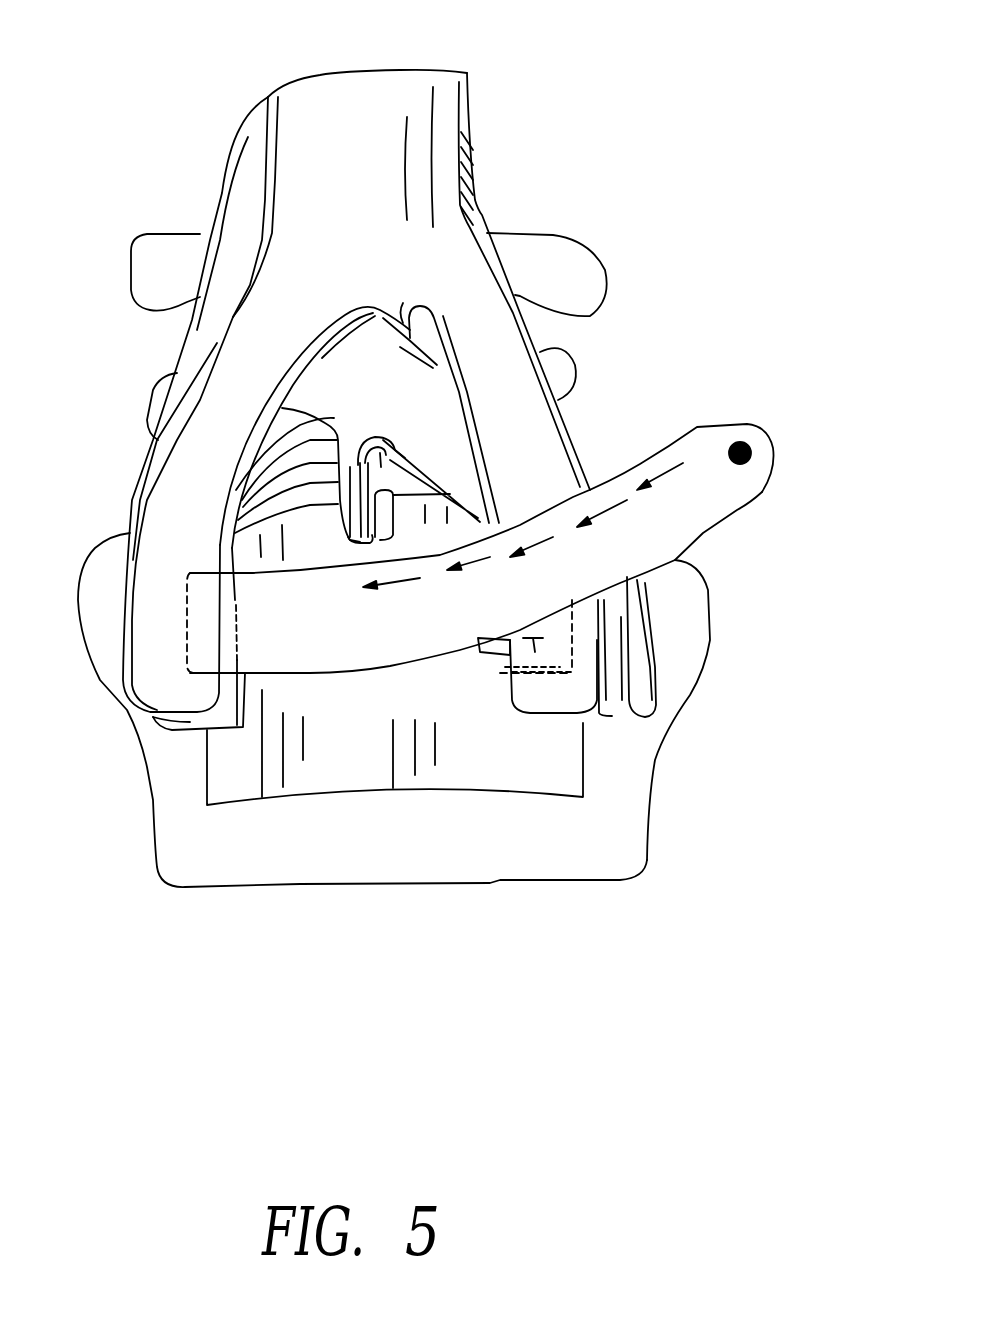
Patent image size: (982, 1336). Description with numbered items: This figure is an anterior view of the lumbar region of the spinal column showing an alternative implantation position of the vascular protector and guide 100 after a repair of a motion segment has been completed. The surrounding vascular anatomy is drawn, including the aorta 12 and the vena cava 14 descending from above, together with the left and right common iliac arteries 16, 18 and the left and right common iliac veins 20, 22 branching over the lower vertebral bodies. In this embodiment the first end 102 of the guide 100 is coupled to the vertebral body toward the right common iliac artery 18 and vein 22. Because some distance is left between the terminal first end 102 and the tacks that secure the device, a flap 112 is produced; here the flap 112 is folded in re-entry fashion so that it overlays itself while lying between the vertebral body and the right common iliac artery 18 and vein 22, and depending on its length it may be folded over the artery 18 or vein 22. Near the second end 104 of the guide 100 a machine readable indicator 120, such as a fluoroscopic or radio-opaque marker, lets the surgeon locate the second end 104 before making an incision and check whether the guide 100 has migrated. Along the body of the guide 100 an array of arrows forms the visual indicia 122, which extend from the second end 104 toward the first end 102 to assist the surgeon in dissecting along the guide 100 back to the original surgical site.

The aorta 12 is at (403, 87).
The vena cava 14 is at (248, 175).
The right common iliac artery 18 is at (540, 463).
The left common iliac artery 16 is at (153, 683).
The left common iliac vein 20 is at (190, 722).
The right common iliac vein 22 is at (620, 700).
The vascular protector and guide 100 is at (352, 652).
The first end 102 is at (492, 647).
The second end 104 is at (713, 423).
The flap 112 is at (537, 668).
The machine readable indicator 120 is at (752, 448).
The visual indicia 122 is at (550, 540).